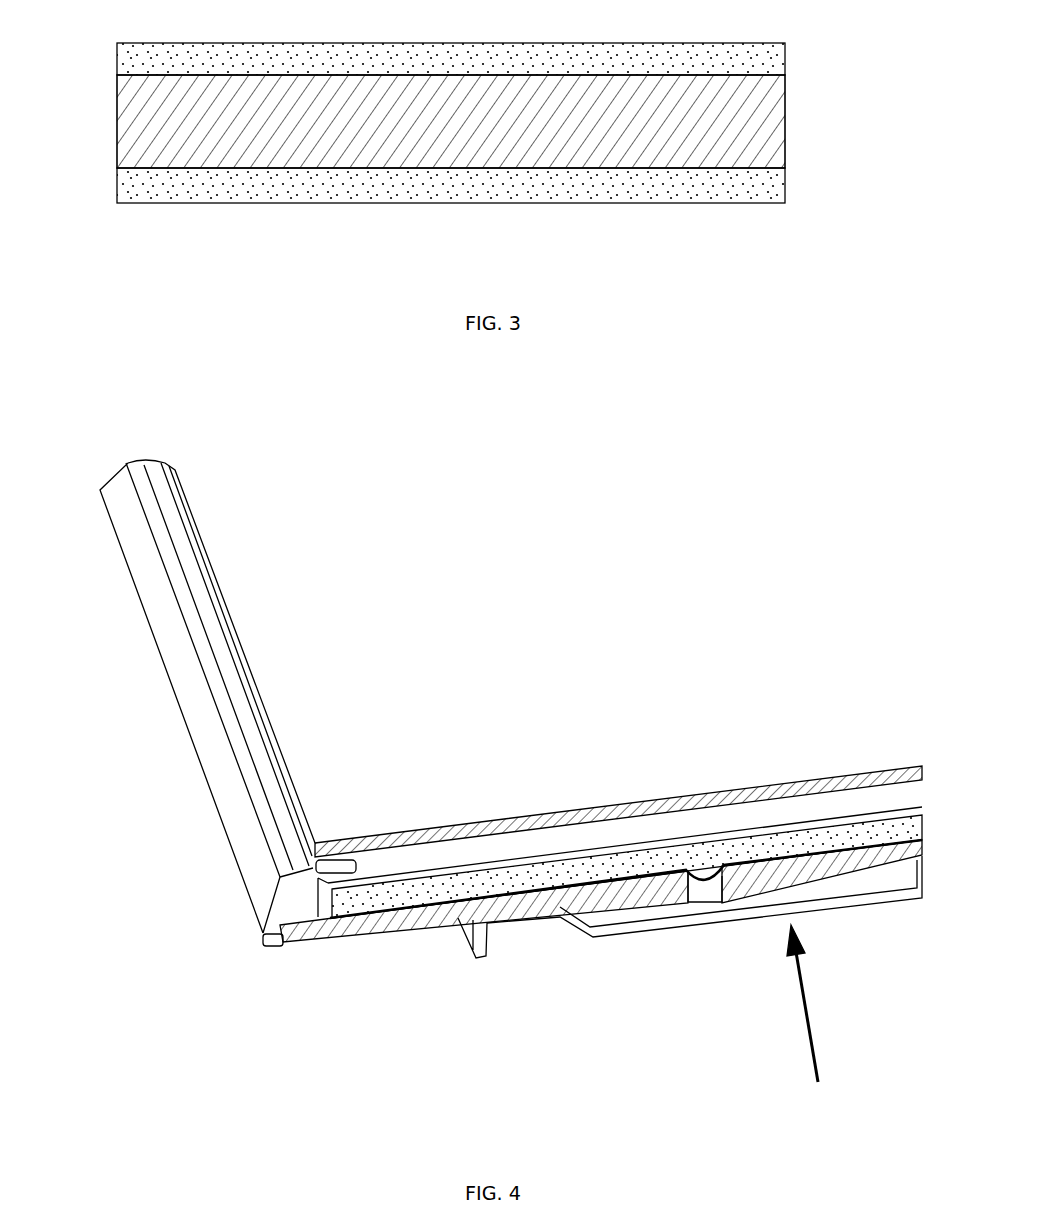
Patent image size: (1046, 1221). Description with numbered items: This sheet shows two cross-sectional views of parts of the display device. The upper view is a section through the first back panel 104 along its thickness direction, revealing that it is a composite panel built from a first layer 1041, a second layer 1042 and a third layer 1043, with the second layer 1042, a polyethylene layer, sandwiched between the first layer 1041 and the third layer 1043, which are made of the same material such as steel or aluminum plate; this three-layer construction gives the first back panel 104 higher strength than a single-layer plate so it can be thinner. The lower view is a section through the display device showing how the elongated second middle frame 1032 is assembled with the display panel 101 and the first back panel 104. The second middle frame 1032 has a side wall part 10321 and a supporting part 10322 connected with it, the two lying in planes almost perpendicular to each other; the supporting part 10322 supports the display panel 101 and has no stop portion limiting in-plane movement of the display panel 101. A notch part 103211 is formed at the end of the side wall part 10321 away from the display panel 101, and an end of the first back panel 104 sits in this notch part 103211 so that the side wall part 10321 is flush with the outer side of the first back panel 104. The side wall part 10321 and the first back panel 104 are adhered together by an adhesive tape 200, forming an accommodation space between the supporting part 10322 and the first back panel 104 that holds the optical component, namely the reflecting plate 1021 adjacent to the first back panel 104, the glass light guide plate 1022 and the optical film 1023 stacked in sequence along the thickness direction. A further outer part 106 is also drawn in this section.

In FIG. 3, the first layer 1041 is at (757, 58).
In FIG. 3, the second layer 1042 is at (757, 128).
In FIG. 3, the third layer 1043 is at (760, 185).
In FIG. 4, the display panel 101 is at (270, 672).
In FIG. 4, the second middle frame 1032 is at (223, 767).
In FIG. 4, the supporting part 10322 is at (313, 866).
In FIG. 4, the side wall part 10321 is at (285, 908).
In FIG. 4, the notch part 103211 is at (265, 935).
In FIG. 4, the adhesive tape 200 is at (293, 923).
In FIG. 4, the first back panel 104 is at (348, 923).
In FIG. 4, the optical film 1023 is at (383, 883).
In FIG. 4, the light guide plate 1022 is at (418, 882).
In FIG. 4, the reflecting plate 1021 is at (447, 880).
In FIG. 4, the housing 106 is at (583, 920).